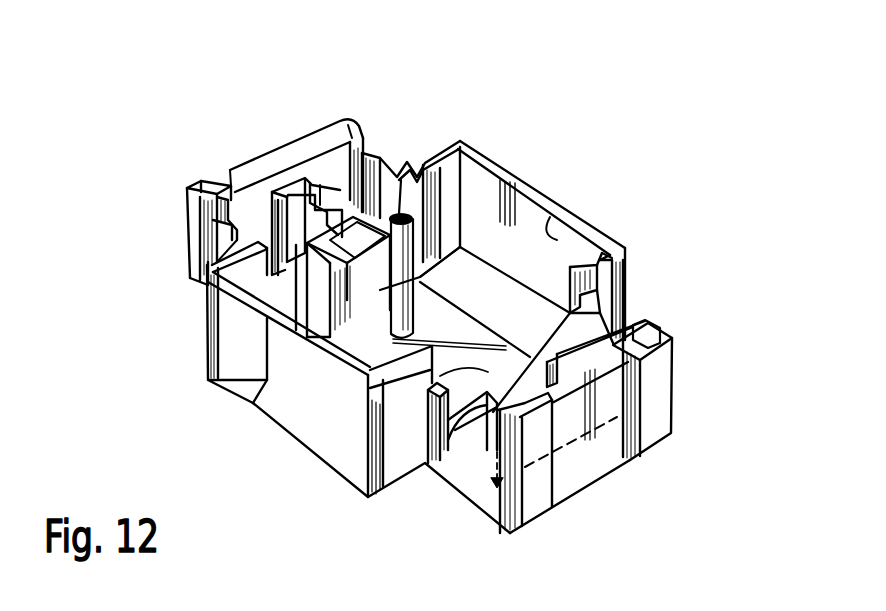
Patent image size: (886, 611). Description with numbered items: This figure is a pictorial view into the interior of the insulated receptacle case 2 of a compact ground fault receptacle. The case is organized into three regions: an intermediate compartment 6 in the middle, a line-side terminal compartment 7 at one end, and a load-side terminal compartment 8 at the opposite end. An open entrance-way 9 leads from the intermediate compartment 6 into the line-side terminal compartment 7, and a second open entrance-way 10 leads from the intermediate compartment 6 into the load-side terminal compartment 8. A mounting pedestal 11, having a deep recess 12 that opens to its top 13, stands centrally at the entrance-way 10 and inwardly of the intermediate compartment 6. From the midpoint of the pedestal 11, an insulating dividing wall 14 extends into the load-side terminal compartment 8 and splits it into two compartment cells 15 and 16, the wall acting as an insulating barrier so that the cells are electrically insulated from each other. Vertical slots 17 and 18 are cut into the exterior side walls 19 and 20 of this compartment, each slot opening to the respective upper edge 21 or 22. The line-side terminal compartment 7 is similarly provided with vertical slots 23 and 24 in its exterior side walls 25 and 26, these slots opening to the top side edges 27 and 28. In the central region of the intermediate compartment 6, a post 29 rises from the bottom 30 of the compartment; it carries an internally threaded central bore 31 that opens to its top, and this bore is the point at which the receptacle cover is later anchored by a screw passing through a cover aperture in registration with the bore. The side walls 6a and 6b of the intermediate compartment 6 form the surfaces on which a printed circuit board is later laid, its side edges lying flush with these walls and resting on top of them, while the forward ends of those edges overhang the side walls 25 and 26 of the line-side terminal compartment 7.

The receptacle case 2 is at (550, 217).
The intermediate compartment 6 is at (628, 258).
The side wall of intermediate compartment 6a is at (270, 370).
The side wall of intermediate compartment 6b is at (545, 265).
The line-side terminal compartment 7 is at (623, 313).
The load-side terminal compartment 8 is at (207, 190).
The entrance-way 9 is at (313, 420).
The entrance-way 10 is at (198, 280).
The mounting pedestal 11 is at (468, 242).
The deep recess 12 is at (356, 128).
The top of pedestal 13 is at (313, 193).
The insulating dividing wall 14 is at (322, 178).
The compartment cell 15 is at (253, 210).
The compartment cell 16 is at (347, 120).
The vertical slot 17 is at (228, 243).
The vertical slot 18 is at (388, 172).
The exterior side wall 19 is at (300, 268).
The exterior side wall 20 is at (380, 168).
The upper edge 21 is at (200, 212).
The upper edge 22 is at (400, 213).
The vertical slot 23 is at (368, 495).
The vertical slot 24 is at (647, 417).
The exterior side wall 25 is at (428, 410).
The exterior side wall 26 is at (647, 327).
The top side edge 27 is at (428, 425).
The top side edge 28 is at (598, 296).
The post 29 is at (508, 232).
The bottom of intermediate compartment 30 is at (280, 323).
The central bore 31 is at (463, 144).